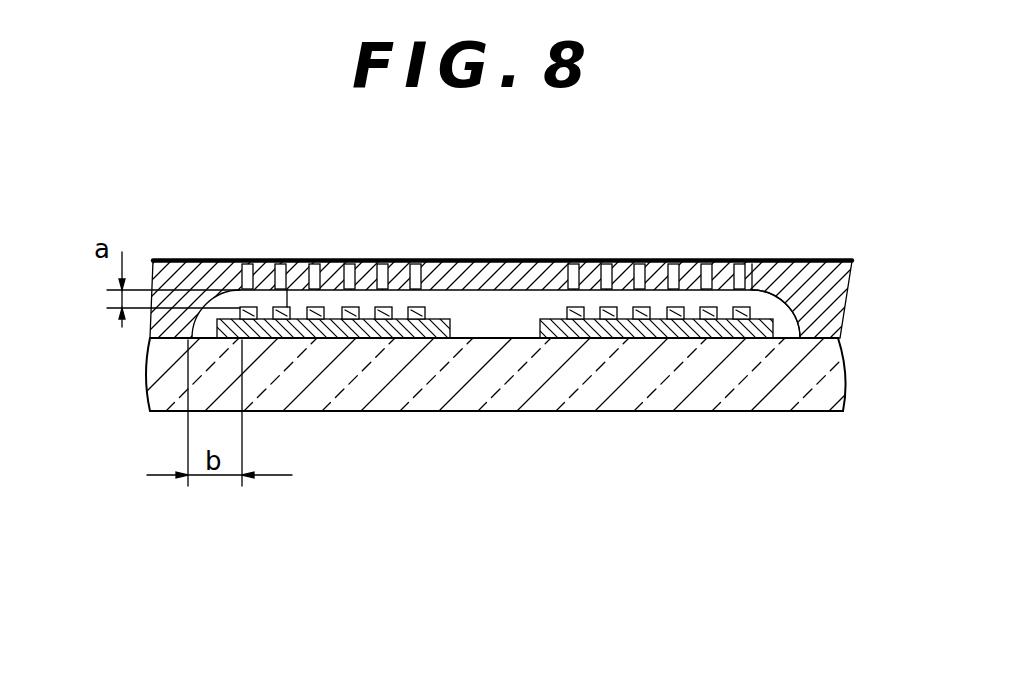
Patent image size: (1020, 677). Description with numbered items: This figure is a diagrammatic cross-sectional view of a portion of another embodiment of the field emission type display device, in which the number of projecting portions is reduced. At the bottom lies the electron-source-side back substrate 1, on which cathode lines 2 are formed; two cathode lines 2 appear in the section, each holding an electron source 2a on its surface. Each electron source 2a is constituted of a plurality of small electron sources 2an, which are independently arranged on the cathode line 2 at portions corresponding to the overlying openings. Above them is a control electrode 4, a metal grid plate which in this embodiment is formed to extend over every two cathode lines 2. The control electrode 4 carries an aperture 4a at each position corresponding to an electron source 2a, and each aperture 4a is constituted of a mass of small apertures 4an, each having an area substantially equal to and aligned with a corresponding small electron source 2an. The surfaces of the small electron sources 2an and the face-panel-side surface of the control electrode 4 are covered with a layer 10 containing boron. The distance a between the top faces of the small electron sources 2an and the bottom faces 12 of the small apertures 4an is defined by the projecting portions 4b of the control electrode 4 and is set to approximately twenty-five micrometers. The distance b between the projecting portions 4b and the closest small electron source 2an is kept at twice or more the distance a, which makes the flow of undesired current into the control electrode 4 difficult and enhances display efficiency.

The back substrate 1 is at (831, 397).
The cathode line 2 is at (778, 326).
The electron source 2a is at (667, 317).
The small electron source 2an is at (573, 305).
The control electrode 4 is at (830, 260).
The aperture 4a is at (606, 278).
The small aperture 4an is at (347, 283).
The projecting portion 4b is at (830, 312).
The layer containing boron 10 is at (768, 260).
The bottom face of small aperture 12 is at (283, 290).